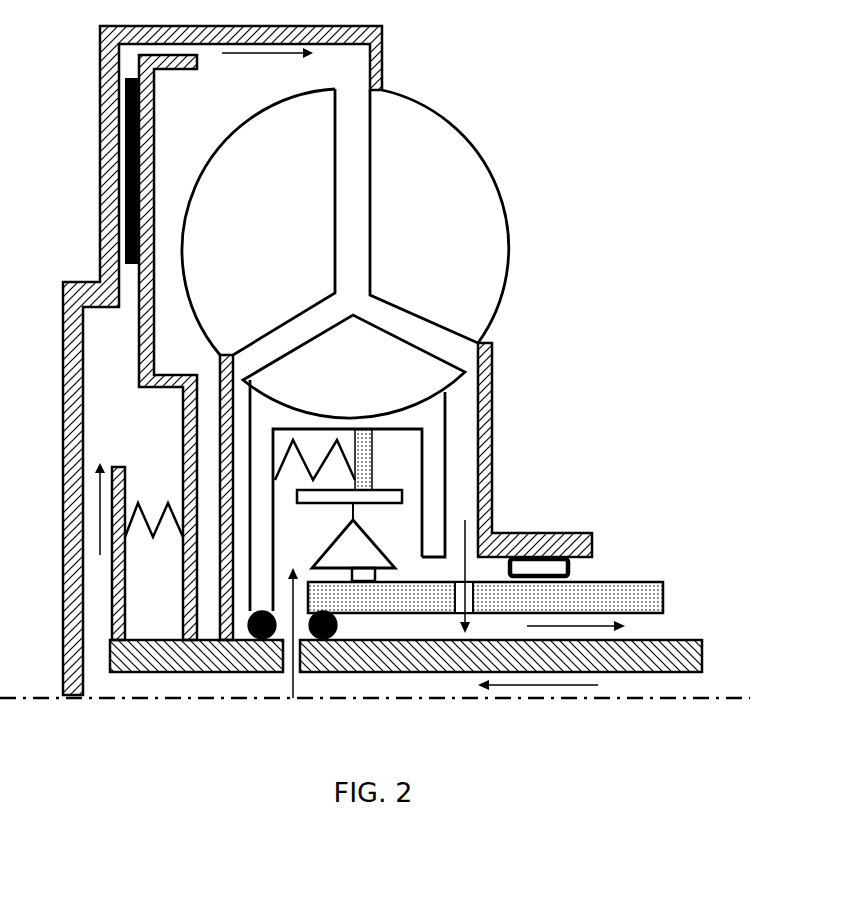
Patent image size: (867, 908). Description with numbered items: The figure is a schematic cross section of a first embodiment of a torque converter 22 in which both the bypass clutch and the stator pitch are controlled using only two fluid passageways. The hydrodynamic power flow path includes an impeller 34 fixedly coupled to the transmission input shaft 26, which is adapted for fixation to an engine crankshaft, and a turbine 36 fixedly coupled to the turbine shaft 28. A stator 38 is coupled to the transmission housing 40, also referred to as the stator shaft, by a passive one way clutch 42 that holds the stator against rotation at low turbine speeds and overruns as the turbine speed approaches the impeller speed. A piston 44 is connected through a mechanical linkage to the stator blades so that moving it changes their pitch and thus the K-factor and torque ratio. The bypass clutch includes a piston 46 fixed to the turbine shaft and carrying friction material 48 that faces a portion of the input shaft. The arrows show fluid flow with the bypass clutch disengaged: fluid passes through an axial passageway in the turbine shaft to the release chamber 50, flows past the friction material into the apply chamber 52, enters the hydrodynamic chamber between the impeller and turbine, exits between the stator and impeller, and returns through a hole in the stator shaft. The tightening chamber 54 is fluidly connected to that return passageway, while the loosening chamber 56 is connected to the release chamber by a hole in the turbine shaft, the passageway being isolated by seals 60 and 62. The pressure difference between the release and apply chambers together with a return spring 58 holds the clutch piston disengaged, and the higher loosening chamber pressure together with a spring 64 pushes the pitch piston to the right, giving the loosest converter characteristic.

The torque converter 22 is at (648, 203).
The transmission input shaft 26 is at (100, 132).
The turbine shaft 28 is at (690, 638).
The impeller 34 is at (430, 242).
The turbine 36 is at (246, 242).
The stator 38 is at (392, 386).
The transmission housing 40 is at (638, 582).
The one way clutch 42 is at (373, 581).
The piston 44 is at (377, 463).
The piston 46 is at (166, 377).
The friction material 48 is at (154, 131).
The release chamber 50 is at (110, 426).
The apply chamber 52 is at (240, 87).
The tightening chamber 54 is at (383, 539).
The loosening chamber 56 is at (297, 542).
The return spring 58 is at (143, 503).
The seal 60 is at (262, 640).
The seal 62 is at (323, 640).
The spring 64 is at (297, 440).